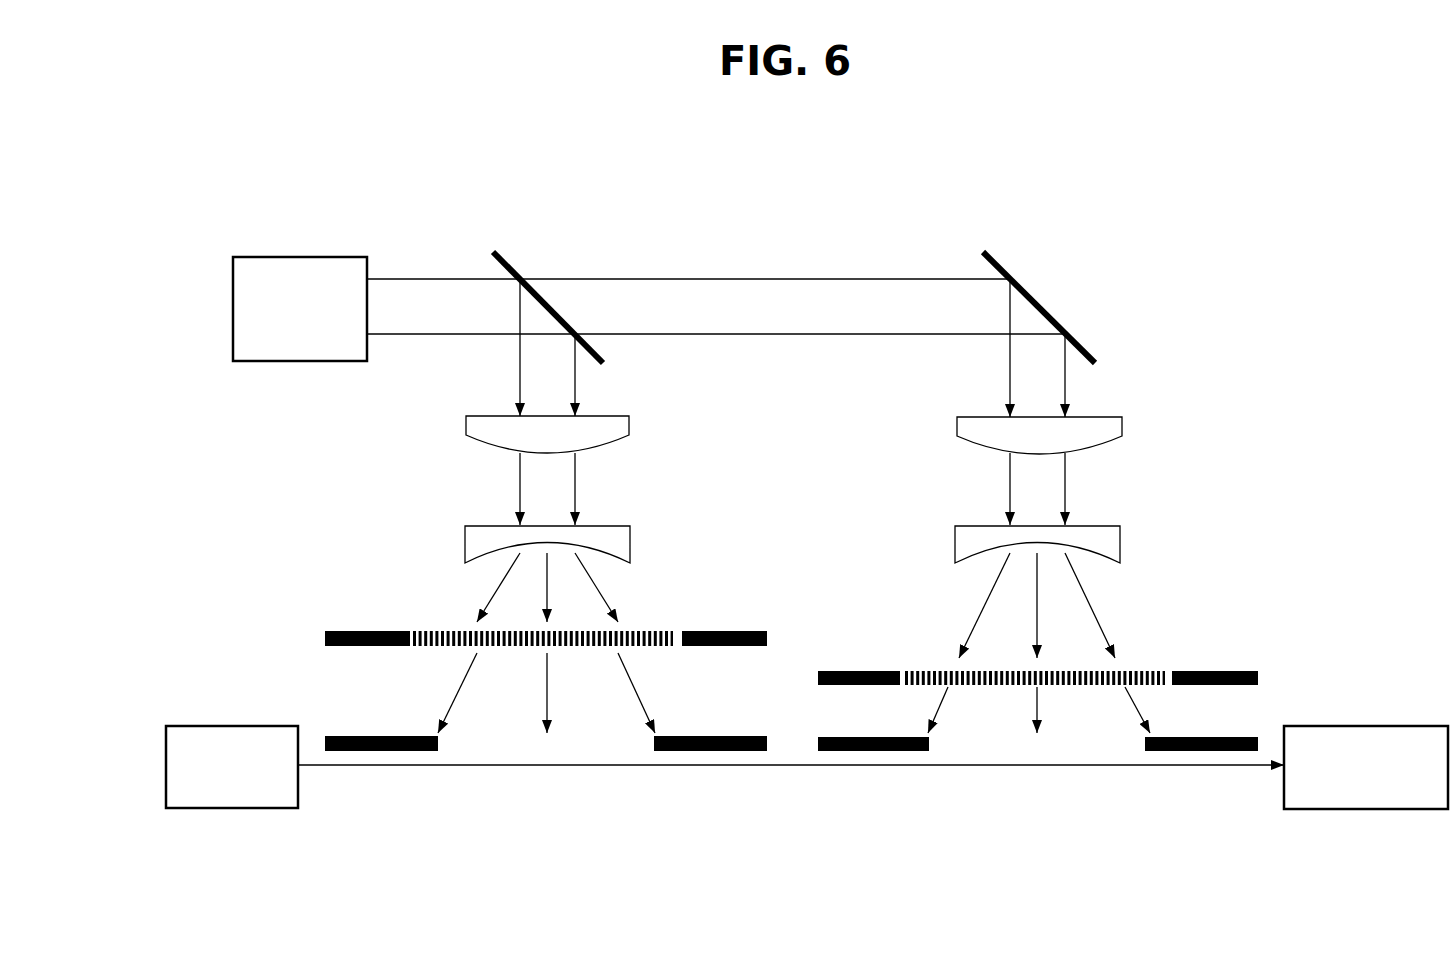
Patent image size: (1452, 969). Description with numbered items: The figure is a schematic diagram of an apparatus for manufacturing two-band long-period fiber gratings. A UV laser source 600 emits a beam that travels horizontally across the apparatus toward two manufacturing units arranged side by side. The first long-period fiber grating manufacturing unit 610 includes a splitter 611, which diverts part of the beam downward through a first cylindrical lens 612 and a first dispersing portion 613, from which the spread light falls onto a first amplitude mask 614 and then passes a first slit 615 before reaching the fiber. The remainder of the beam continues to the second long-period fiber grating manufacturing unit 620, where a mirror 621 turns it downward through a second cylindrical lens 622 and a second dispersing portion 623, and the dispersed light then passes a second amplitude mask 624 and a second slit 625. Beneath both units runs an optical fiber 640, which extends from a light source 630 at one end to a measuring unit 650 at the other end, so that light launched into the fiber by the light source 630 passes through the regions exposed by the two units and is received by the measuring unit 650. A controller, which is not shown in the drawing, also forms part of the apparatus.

The UV laser source 600 is at (294, 362).
The first long-period fiber grating manufacturing unit 610 is at (578, 202).
The splitter 611 is at (512, 265).
The first cylindrical lens 612 is at (630, 425).
The first dispersing portion 613 is at (630, 530).
The first amplitude mask 614 is at (355, 631).
The first slit 615 is at (365, 736).
The second long-period fiber grating manufacturing unit 620 is at (1070, 202).
The mirror 621 is at (1003, 265).
The second cylindrical lens 622 is at (1122, 425).
The second dispersing portion 623 is at (1120, 530).
The second amplitude mask 624 is at (1210, 670).
The second slit 625 is at (1190, 736).
The light source 630 is at (238, 726).
The optical fiber 640 is at (607, 766).
The measuring unit 650 is at (1357, 726).